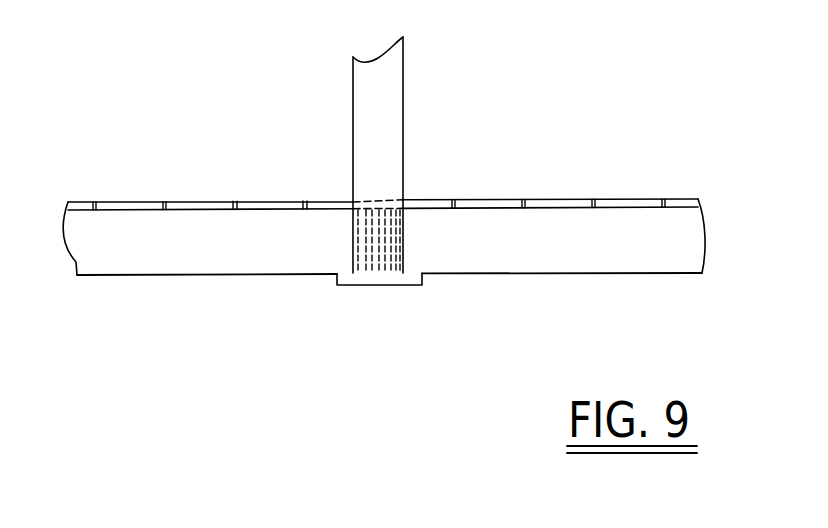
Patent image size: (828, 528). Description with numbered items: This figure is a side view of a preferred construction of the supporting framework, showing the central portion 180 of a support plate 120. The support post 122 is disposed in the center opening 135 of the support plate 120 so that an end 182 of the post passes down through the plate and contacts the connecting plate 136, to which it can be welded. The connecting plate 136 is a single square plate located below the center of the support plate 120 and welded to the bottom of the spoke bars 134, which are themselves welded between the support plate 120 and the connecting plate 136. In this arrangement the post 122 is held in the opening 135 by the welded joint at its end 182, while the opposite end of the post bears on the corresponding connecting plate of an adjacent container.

The support plate 120 is at (626, 72).
The support post 122 is at (403, 88).
The spoke bars 134 is at (227, 274).
The center opening 135 is at (403, 200).
The connecting plate 136 is at (412, 285).
The central portion 180 is at (670, 199).
The end of the post 182 is at (403, 258).